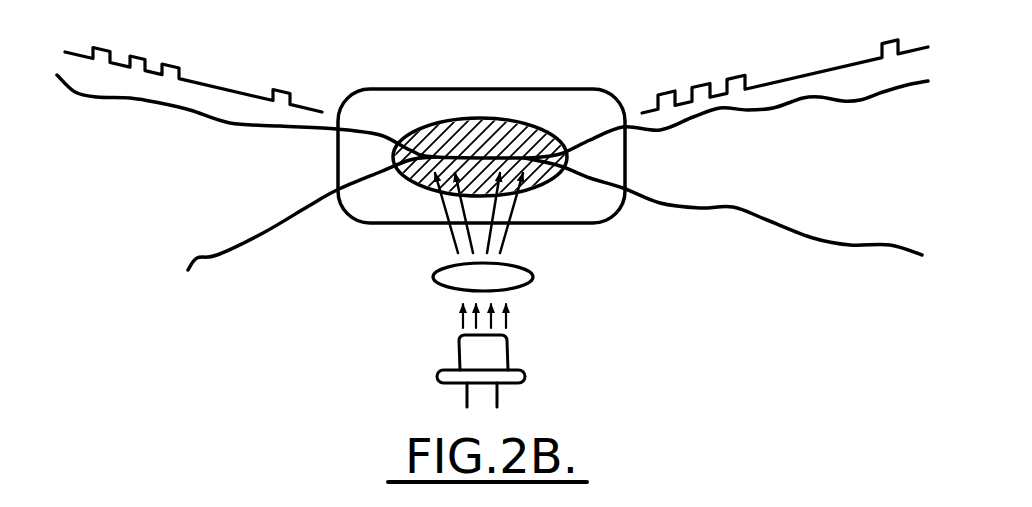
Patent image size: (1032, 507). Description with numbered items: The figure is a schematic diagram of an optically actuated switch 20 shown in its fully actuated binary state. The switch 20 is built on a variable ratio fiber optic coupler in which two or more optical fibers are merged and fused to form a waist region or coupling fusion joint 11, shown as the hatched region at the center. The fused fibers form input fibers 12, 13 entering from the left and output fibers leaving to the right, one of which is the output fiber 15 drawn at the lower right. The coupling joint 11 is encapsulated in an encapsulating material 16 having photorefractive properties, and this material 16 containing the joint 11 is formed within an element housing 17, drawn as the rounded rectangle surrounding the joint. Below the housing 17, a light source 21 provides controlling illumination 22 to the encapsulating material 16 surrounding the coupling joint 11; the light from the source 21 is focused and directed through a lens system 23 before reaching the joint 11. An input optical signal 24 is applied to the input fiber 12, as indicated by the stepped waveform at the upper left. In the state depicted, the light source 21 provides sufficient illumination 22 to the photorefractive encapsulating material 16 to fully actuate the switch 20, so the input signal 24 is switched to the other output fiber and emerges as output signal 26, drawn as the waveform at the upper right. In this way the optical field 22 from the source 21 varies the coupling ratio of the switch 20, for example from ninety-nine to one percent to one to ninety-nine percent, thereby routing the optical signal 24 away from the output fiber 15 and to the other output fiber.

The coupling fusion joint 11 is at (468, 158).
The input fiber 12 is at (97, 97).
The input fiber 13 is at (258, 230).
The output fiber 15 is at (817, 240).
The encapsulating material 16 is at (418, 140).
The element housing 17 is at (565, 89).
The optically actuated switch 20 is at (635, 68).
The light source 21 is at (458, 355).
The controlling illumination 22 is at (443, 235).
The lens system 23 is at (533, 272).
The input optical signal 24 is at (143, 57).
The output signal 26 is at (743, 78).